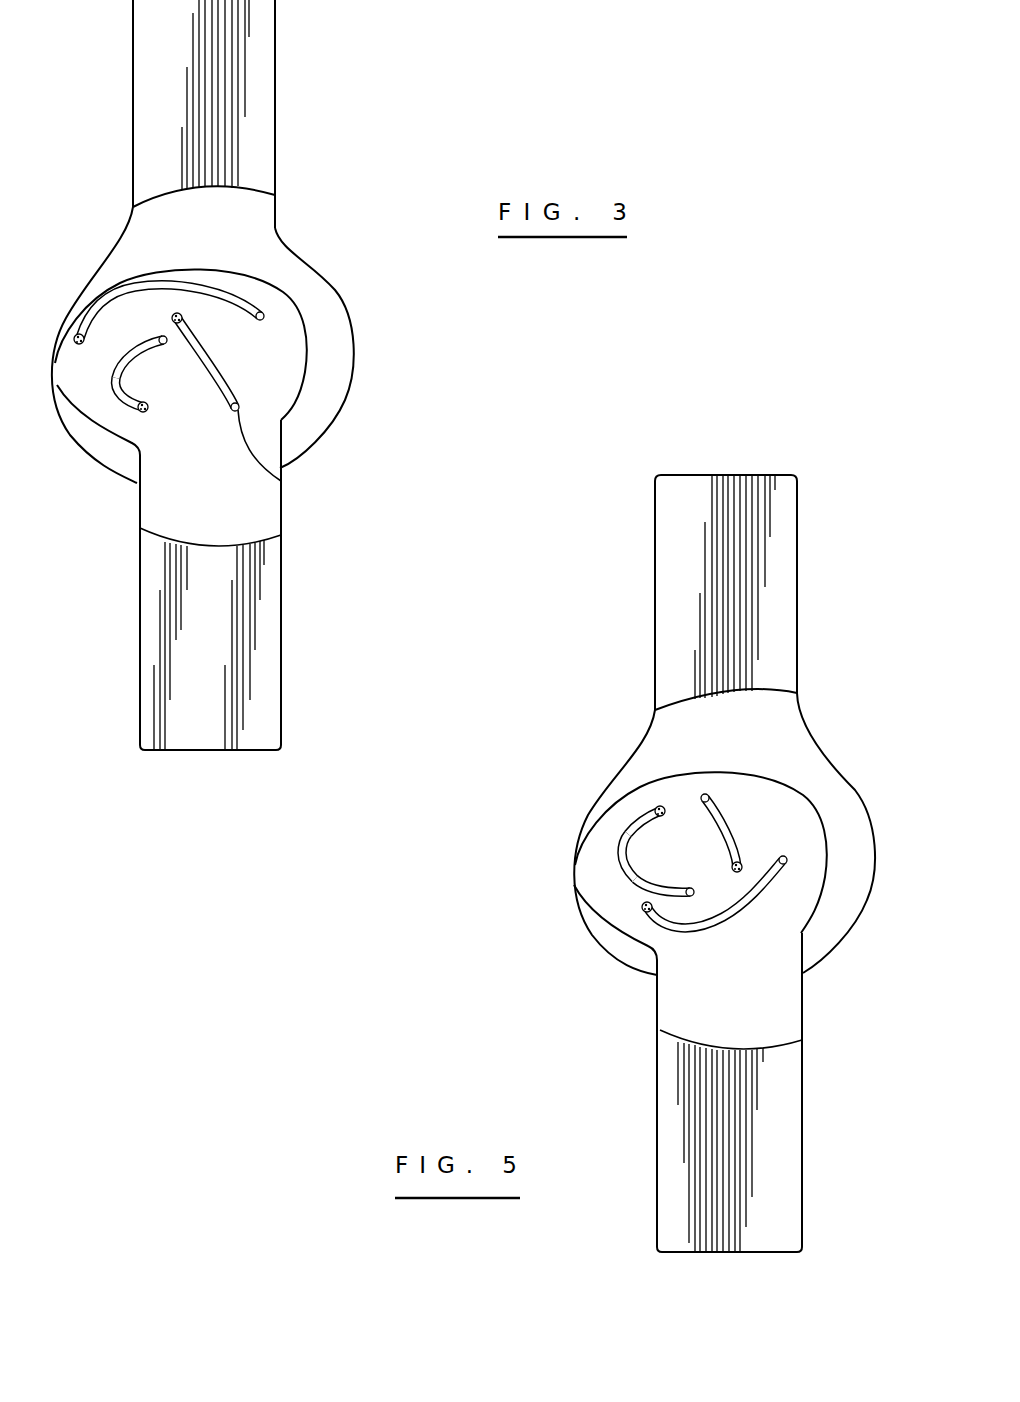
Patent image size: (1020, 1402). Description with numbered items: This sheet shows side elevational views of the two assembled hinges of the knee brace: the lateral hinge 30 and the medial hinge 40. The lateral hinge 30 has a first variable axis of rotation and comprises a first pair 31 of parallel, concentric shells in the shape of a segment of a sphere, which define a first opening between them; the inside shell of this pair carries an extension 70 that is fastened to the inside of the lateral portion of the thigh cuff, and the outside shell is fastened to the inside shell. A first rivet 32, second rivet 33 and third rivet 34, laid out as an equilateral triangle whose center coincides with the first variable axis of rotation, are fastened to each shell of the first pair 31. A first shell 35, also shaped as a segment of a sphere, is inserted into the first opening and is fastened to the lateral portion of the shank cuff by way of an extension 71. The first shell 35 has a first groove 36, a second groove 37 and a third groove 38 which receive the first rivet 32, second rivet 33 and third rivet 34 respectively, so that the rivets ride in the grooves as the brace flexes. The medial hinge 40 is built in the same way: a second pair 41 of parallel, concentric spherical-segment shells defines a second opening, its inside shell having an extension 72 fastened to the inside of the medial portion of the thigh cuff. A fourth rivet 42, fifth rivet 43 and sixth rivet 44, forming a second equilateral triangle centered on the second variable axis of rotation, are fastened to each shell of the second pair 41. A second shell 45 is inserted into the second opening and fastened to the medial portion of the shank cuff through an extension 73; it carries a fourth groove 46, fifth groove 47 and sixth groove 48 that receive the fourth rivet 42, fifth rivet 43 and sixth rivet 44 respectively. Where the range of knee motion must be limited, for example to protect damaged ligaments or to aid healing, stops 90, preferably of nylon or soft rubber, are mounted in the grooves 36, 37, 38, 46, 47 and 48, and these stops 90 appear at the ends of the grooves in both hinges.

In FIG. 3, the lateral hinge 30 is at (416, 370).
In FIG. 3, the first pair of shells 31 is at (317, 265).
In FIG. 3, the first rivet 32 is at (290, 313).
In FIG. 3, the second rivet 33 is at (284, 478).
In FIG. 3, the third rivet 34 is at (158, 341).
In FIG. 3, the first shell 35 is at (283, 508).
In FIG. 3, the first groove 36 is at (103, 307).
In FIG. 3, the second groove 37 is at (224, 377).
In FIG. 3, the third groove 38 is at (115, 397).
In FIG. 5, the medial hinge 40 is at (472, 892).
In FIG. 5, the second pair of shells 41 is at (819, 760).
In FIG. 5, the fourth rivet 42 is at (650, 893).
In FIG. 5, the fifth rivet 43 is at (790, 858).
In FIG. 5, the sixth rivet 44 is at (648, 802).
In FIG. 5, the second shell 45 is at (803, 983).
In FIG. 5, the fourth groove 46 is at (621, 847).
In FIG. 5, the fifth groove 47 is at (753, 893).
In FIG. 5, the sixth groove 48 is at (727, 833).
In FIG. 3, the extension 70 is at (258, 110).
In FIG. 3, the extension 71 is at (266, 672).
In FIG. 5, the extension 72 is at (680, 595).
In FIG. 5, the extension 73 is at (762, 1138).
In FIG. 3, the stops 90 is at (70, 340).
In FIG. 5, the stops 90 is at (652, 808).